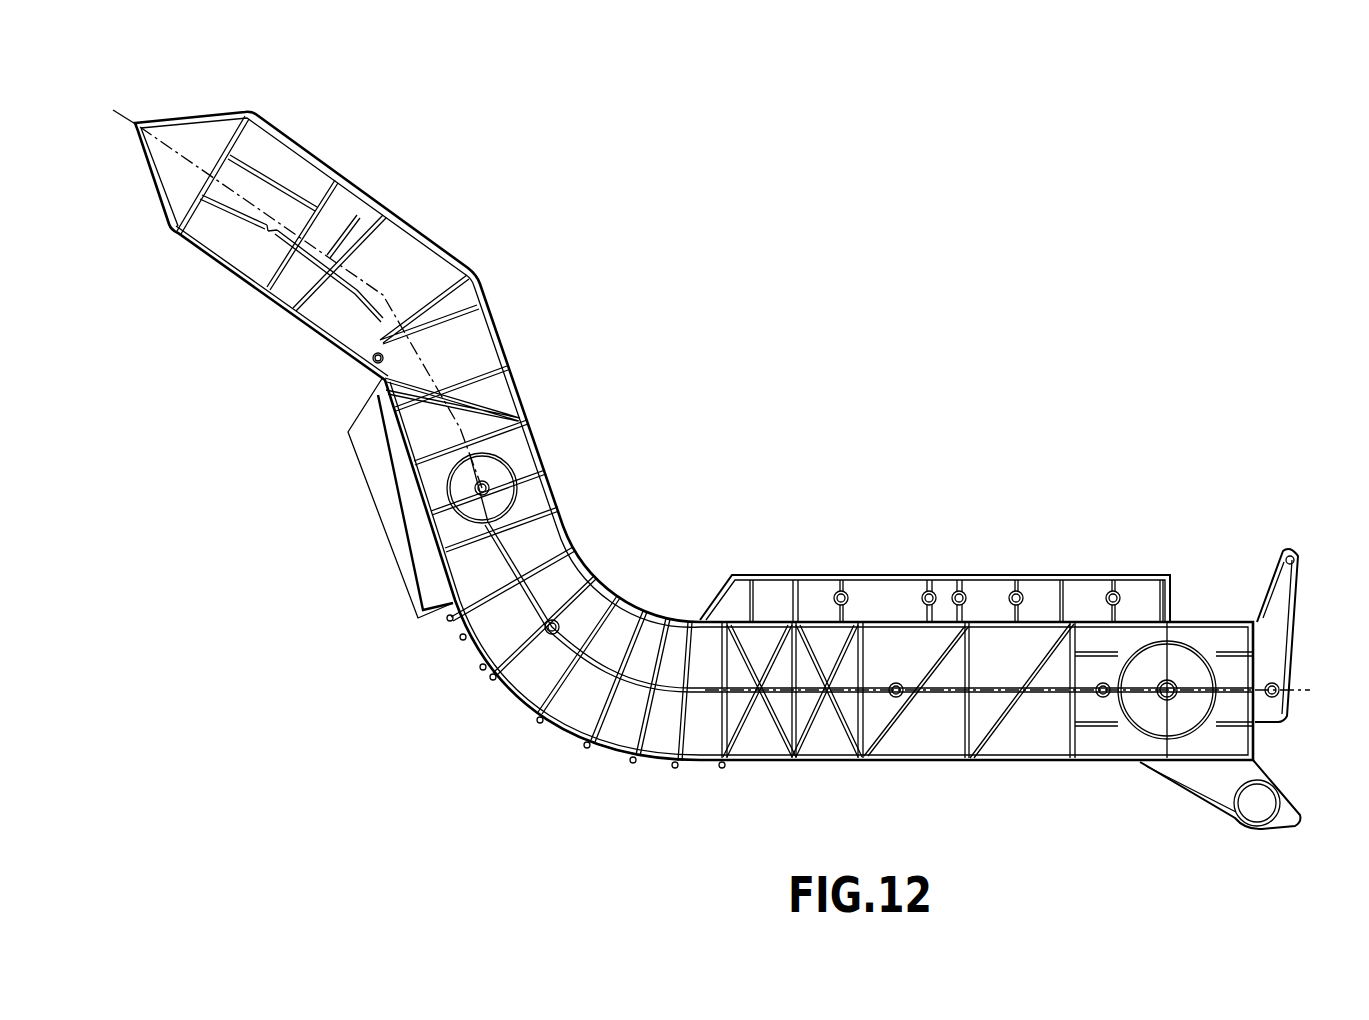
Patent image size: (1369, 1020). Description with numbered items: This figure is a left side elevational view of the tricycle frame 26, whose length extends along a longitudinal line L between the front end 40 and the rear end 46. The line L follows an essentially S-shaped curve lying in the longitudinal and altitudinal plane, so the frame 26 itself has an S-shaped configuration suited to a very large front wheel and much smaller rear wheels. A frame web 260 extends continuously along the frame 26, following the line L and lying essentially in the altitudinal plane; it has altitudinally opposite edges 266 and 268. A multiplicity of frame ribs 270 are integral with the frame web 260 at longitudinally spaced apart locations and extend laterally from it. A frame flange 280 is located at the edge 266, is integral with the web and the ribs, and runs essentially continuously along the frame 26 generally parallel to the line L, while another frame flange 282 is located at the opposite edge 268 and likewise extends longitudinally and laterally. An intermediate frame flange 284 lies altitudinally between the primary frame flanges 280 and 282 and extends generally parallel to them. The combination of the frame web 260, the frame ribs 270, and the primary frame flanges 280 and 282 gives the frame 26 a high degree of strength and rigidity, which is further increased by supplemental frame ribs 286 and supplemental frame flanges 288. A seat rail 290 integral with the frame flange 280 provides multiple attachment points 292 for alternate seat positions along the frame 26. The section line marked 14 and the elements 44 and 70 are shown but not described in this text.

The frame 26 is at (884, 766).
The front end 40 is at (140, 120).
The longitudinal line L is at (135, 126).
The supplemental frame flanges 288 is at (325, 218).
The frame flange 280 is at (560, 500).
The edge 266 is at (610, 587).
The edge 268 is at (570, 732).
The frame web 260 is at (535, 670).
The intermediate frame flange 284 is at (488, 638).
The frame flange 282 is at (612, 755).
The frame ribs 270 is at (720, 730).
The supplemental frame ribs 286 is at (747, 732).
The seat rail 290 is at (913, 573).
The attachment points 292 is at (838, 597).
The drive sprocket 44 is at (1163, 700).
The rear end 46 is at (1255, 736).
The roller bracket 70 is at (1297, 822).
The section line 14 is at (683, 667).